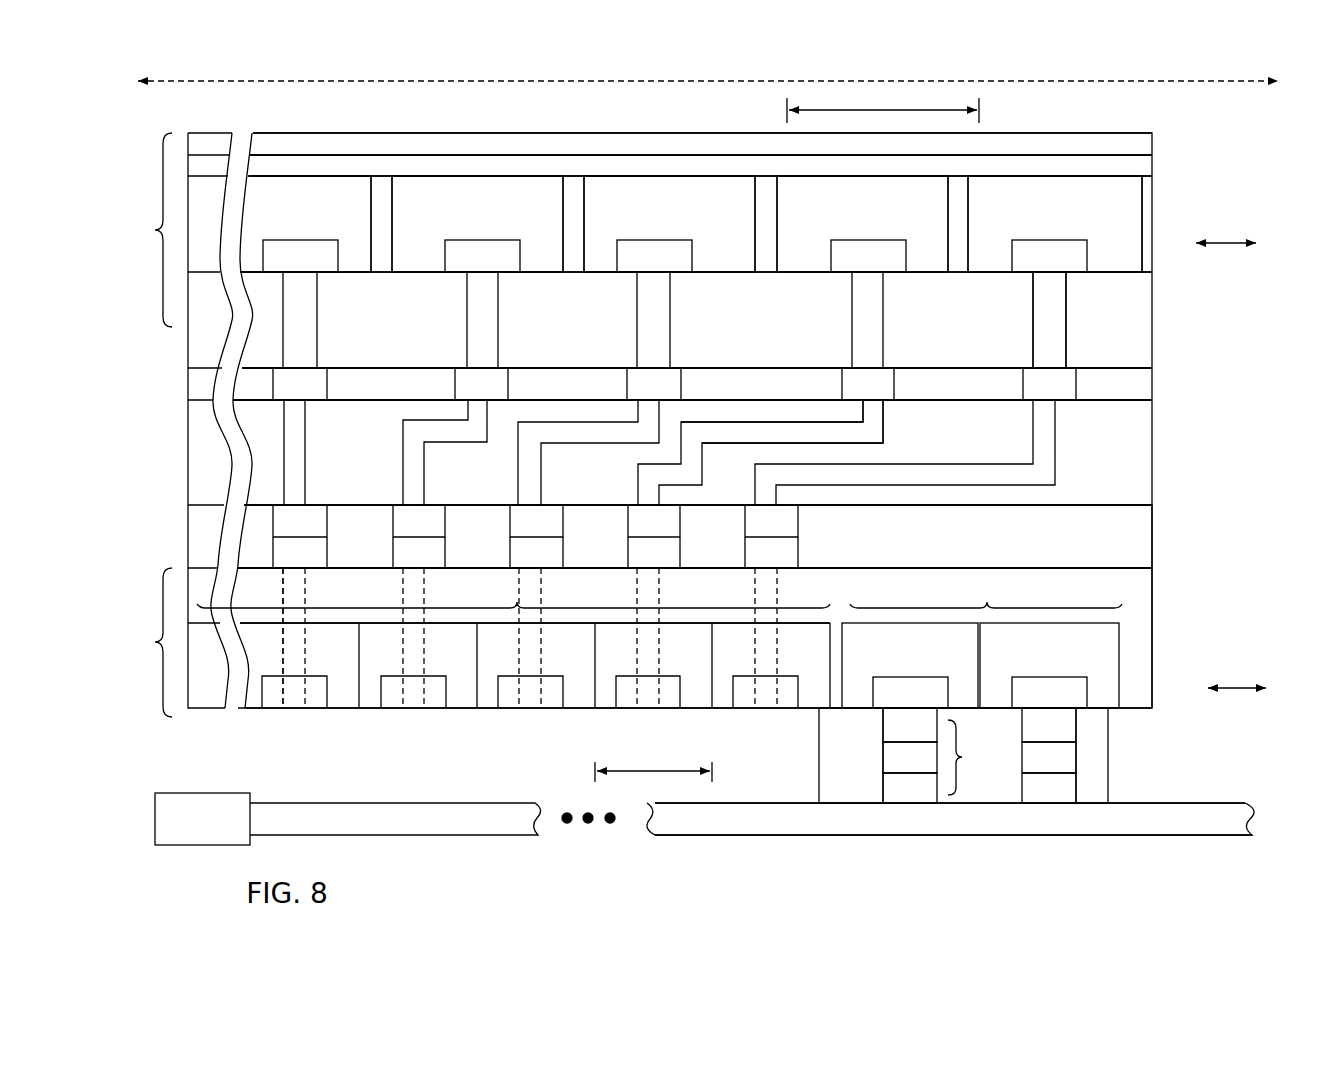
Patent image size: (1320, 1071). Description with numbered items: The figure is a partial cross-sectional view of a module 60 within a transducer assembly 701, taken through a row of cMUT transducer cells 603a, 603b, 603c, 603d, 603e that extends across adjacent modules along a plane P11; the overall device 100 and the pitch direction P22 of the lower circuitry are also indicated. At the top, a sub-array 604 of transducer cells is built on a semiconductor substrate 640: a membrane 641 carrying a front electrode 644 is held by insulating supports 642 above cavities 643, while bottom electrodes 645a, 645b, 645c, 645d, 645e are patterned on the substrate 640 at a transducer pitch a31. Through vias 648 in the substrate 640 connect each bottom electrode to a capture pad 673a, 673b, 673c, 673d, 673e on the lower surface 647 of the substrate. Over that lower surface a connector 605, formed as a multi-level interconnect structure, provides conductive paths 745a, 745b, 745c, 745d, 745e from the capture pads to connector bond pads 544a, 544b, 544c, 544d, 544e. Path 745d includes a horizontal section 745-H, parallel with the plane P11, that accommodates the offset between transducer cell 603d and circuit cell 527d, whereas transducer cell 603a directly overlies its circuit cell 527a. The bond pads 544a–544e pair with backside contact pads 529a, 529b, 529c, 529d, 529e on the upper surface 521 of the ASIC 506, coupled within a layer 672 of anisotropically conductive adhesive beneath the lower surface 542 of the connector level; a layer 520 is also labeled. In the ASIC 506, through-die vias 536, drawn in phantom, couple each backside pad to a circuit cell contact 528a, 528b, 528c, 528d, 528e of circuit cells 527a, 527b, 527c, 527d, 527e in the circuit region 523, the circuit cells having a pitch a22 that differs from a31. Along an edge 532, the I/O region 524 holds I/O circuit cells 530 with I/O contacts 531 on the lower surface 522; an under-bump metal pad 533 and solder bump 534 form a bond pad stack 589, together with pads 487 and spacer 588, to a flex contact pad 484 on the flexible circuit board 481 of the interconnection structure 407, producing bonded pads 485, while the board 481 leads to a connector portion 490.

The module 60 is at (348, 118).
The transducer assembly 701 is at (959, 81).
The display 100 is at (1215, 59).
The pitch of the transducer cells a31 is at (883, 102).
The front electrode 644 is at (1130, 146).
The membrane 641 is at (1130, 166).
The plane P11 is at (1225, 243).
The sub-array 604 is at (148, 230).
The insulating supports 642 is at (381, 195).
The cavities 643 is at (350, 195).
The transducer cell 603a is at (266, 207).
The transducer cell 603b is at (406, 207).
The transducer cell 603c is at (596, 207).
The transducer cell 603d is at (799, 207).
The transducer cell 603e is at (981, 207).
The bottom electrode 645a is at (276, 266).
The bottom electrode 645b is at (458, 266).
The bottom electrode 645c is at (630, 266).
The bottom electrode 645d is at (844, 266).
The bottom electrode 645e is at (1026, 266).
The through via 648 is at (1066, 303).
The semiconductor substrate 640 is at (725, 308).
The lower surface 647 is at (1133, 370).
The capture pad 673a is at (276, 395).
The capture pad 673b is at (457, 395).
The capture pad 673c is at (630, 395).
The capture pad 673d is at (844, 395).
The capture pad 673e is at (1025, 395).
The connector 605 is at (1158, 435).
The conductive path 745a is at (308, 452).
The conductive path 745b is at (400, 443).
The conductive path 745c is at (518, 497).
The conductive path 745d is at (636, 497).
The conductive path 745e is at (1030, 413).
The horizontal section 745-H is at (798, 420).
The lower surface 542 is at (1120, 508).
The connector bond pad 544a is at (276, 532).
The connector bond pad 544b is at (395, 532).
The connector bond pad 544c is at (512, 532).
The connector bond pad 544d is at (630, 532).
The connector bond pad 544e is at (747, 532).
The backside contact pad 529a is at (276, 563).
The backside contact pad 529b is at (395, 563).
The backside contact pad 529c is at (512, 563).
The backside contact pad 529d is at (630, 563).
The backside contact pad 529e is at (747, 563).
The layer of anisotropically conductive adhesive 672 is at (864, 558).
The upper surface 521 is at (1128, 570).
The backplane layer 520 is at (810, 601).
The circuit region 523 is at (513, 593).
The I/O region 524 is at (986, 593).
The edge 532 is at (1158, 587).
The through-die via 536 is at (283, 577).
The ASIC 506 is at (148, 642).
The circuit cell 527a is at (306, 661).
The circuit cell 527b is at (424, 661).
The circuit cell 527c is at (541, 661).
The circuit cell 527d is at (661, 661).
The circuit cell 527e is at (778, 661).
The circuit cell contact 528a is at (316, 697).
The circuit cell contact 528b is at (436, 697).
The circuit cell contact 528c is at (553, 697).
The circuit cell contact 528d is at (628, 697).
The circuit cell contact 528e is at (745, 697).
The pitch of the circuit cells a22 is at (653, 761).
The I/O circuit cell 530 is at (892, 656).
The I/O contact 531 is at (892, 708).
The spacer 588 is at (832, 746).
The solder bump 534 is at (892, 741).
The under-bump metal pad 533 is at (892, 772).
The pad 487 is at (892, 803).
The bond stack 589 is at (978, 757).
The lower surface 522 is at (1140, 712).
The pitch direction P22 is at (1235, 688).
The connector portion 490 is at (185, 833).
The flexible circuit board 481 is at (1034, 833).
The flex contact pad 484 is at (1140, 803).
The bonded pad 485 is at (1160, 835).
The interconnection structure 407 is at (1208, 797).